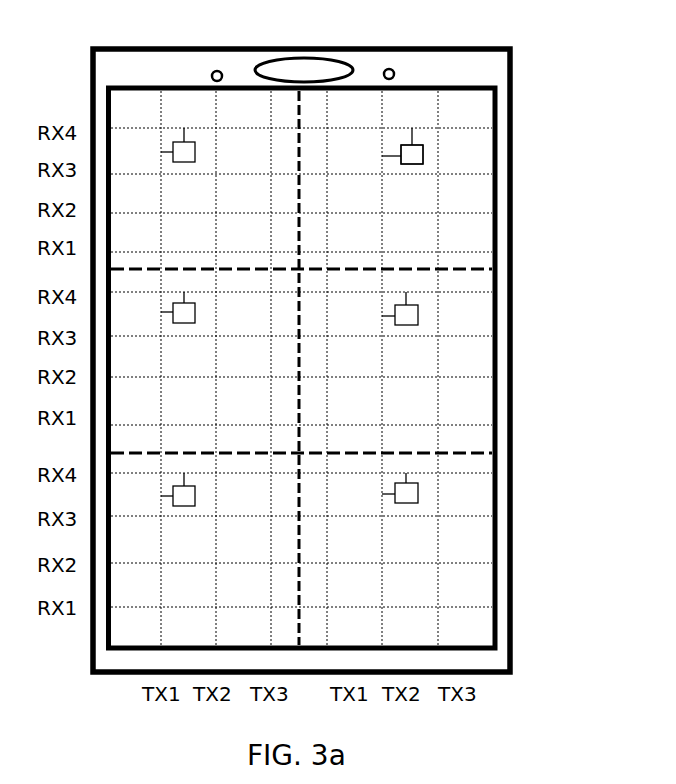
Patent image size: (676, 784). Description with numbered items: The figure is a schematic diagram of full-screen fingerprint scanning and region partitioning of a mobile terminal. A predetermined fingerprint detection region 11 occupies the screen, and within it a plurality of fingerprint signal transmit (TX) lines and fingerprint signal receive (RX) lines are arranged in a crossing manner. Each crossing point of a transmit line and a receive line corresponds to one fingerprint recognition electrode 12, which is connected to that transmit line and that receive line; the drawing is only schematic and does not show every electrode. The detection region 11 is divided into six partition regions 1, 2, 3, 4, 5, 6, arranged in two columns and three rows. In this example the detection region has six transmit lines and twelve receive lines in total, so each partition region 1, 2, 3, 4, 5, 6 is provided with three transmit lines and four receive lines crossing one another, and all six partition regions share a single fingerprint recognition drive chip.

The predetermined fingerprint detection region 11 is at (495, 557).
The fingerprint recognition electrode 12 is at (423, 155).
The partition region 1 is at (180, 170).
The partition region 2 is at (402, 170).
The partition region 3 is at (180, 333).
The partition region 4 is at (401, 333).
The partition region 5 is at (182, 515).
The partition region 6 is at (401, 515).